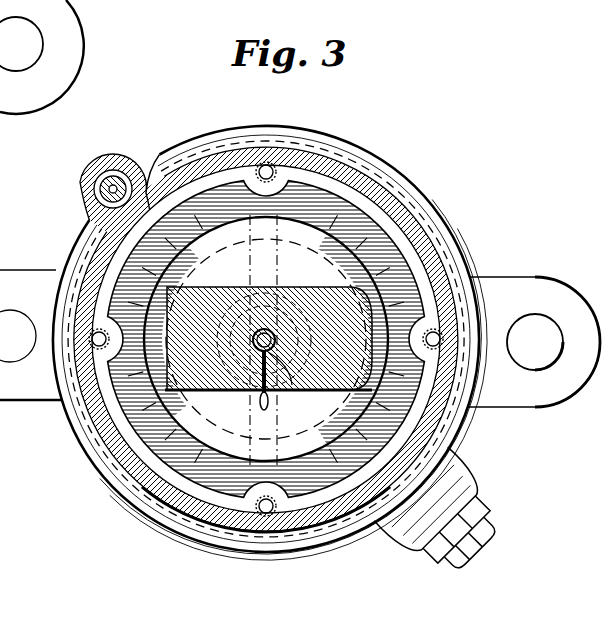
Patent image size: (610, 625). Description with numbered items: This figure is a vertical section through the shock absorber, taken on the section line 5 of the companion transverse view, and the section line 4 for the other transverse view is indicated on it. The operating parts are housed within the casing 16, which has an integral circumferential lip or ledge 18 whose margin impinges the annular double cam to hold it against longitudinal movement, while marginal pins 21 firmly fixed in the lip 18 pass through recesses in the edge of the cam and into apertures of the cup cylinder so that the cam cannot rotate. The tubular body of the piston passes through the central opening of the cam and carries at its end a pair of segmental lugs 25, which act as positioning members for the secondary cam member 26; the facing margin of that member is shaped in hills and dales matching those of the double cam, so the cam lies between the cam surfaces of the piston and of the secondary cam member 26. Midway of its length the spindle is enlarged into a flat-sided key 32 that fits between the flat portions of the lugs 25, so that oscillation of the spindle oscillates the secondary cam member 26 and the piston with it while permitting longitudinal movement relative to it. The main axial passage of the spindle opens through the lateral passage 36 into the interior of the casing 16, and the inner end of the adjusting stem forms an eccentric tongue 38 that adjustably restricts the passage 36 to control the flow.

The section line 4- 4 is at (90, 45).
The section line 5- 5 is at (88, 158).
The casing 16 is at (435, 231).
The lip or ledge 18 is at (330, 160).
The marginal pins 21 is at (283, 165).
The segmental lugs 25 is at (293, 266).
The secondary cam member 26 is at (373, 290).
The flat-sided key 32 is at (180, 358).
The lateral passage 36 is at (276, 388).
The eccentric tongue 38 is at (266, 300).